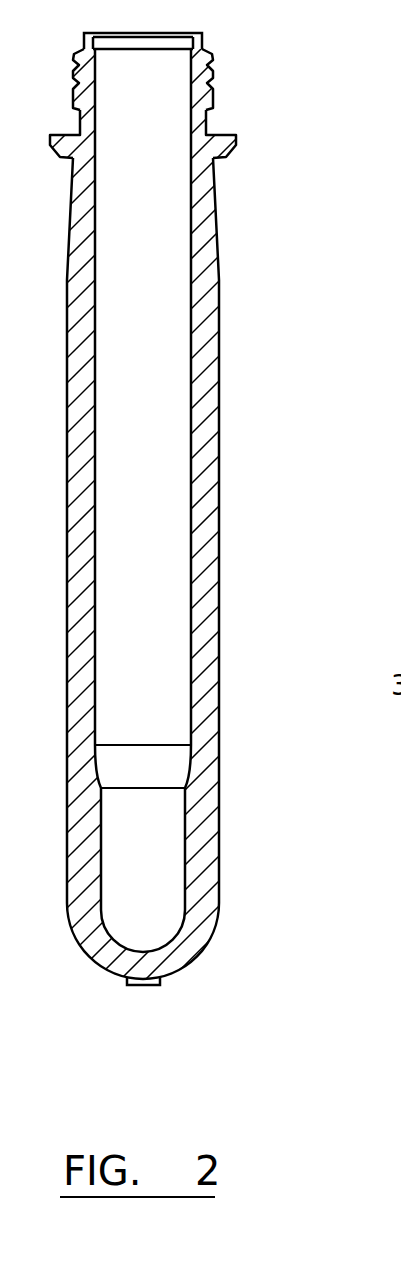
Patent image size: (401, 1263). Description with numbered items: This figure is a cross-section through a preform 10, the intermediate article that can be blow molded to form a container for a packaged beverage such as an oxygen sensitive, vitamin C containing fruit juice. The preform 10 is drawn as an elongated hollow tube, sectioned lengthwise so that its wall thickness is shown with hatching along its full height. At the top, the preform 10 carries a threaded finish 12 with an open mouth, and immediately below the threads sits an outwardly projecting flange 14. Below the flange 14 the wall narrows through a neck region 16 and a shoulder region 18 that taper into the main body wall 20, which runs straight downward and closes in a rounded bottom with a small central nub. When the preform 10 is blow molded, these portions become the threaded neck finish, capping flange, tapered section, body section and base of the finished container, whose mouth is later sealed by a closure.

The preform 10 is at (200, 587).
The threaded portion 12 is at (205, 63).
The flange 14 is at (224, 131).
The neck portion 16 is at (215, 207).
The tapered shoulder portion 18 is at (217, 248).
The sidewall 20 is at (220, 623).